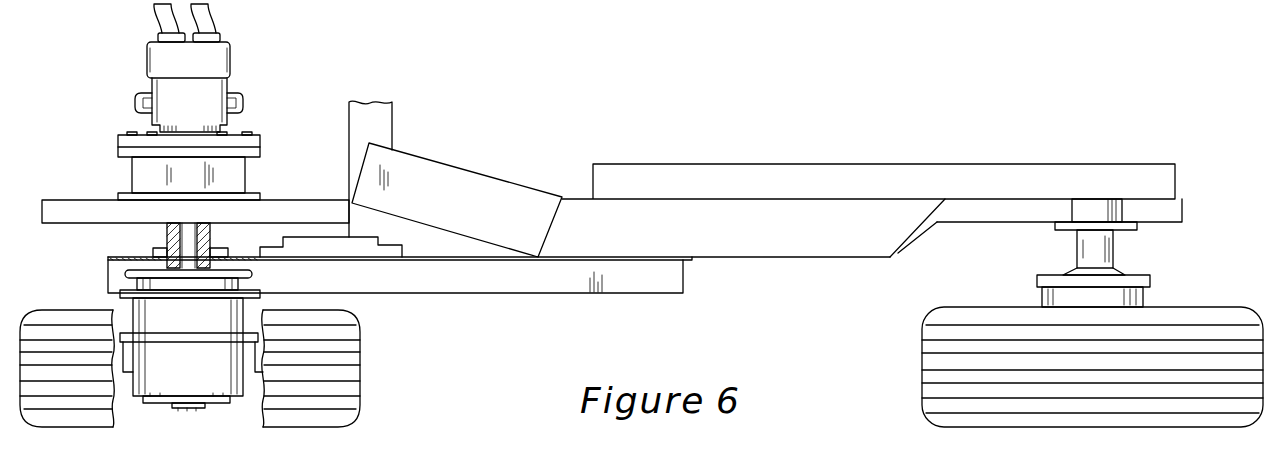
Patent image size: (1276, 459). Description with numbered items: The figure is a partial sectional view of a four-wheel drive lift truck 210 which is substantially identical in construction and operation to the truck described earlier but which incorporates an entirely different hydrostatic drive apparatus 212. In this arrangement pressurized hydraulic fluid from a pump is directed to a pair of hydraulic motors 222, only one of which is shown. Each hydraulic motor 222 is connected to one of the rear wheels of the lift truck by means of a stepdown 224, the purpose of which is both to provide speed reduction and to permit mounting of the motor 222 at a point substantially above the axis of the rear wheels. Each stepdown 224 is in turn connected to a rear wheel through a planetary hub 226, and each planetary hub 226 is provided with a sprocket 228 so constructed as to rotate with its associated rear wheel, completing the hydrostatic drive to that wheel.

The four-wheel drive lift truck 210 is at (514, 137).
The hydrostatic drive apparatus 212 is at (134, 85).
The hydraulic motor 222 is at (200, 65).
The stepdown 224 is at (152, 172).
The planetary hub 226 is at (197, 370).
The sprocket 228 is at (128, 275).